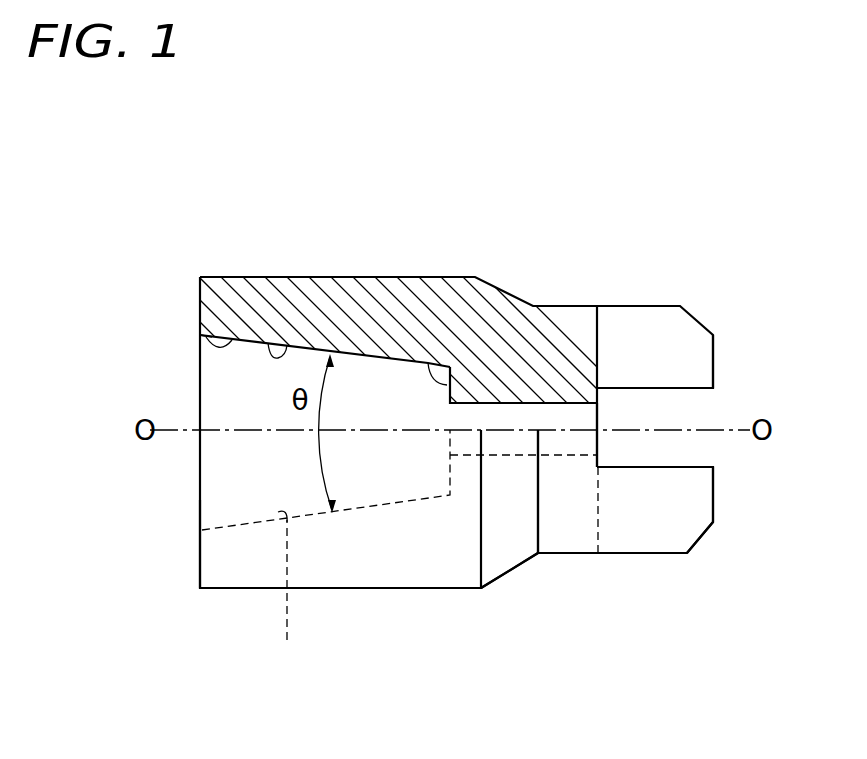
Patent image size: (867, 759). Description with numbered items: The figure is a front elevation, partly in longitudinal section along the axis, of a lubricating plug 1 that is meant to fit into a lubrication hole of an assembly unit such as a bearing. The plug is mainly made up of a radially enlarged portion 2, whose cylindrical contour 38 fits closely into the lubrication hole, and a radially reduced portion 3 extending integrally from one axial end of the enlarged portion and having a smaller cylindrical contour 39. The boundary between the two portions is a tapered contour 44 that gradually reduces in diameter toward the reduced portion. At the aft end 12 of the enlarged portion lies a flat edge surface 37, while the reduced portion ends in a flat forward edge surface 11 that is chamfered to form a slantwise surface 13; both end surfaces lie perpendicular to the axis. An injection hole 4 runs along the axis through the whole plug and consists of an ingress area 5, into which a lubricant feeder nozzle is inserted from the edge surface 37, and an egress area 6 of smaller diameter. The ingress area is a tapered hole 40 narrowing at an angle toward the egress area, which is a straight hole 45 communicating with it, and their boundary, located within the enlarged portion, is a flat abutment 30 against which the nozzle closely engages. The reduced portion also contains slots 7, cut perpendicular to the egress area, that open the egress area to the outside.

The lubricating plug 1 is at (508, 270).
The radially enlarged portion 2 is at (345, 292).
The radially reduced portion 3 is at (605, 306).
The injection hole 4 is at (507, 413).
The ingress area 5 is at (200, 342).
The egress area 6 is at (570, 417).
The slot 7 is at (648, 407).
The forward edge surface 11 is at (768, 392).
The aft end 12 is at (178, 392).
The slantwise surface 13 is at (705, 510).
The flat abutment 30 is at (427, 361).
The edge surface 37 is at (202, 568).
The cylindrical contour 38 is at (347, 589).
The cylindrical contour 39 is at (557, 306).
The tapered hole 40 is at (268, 343).
The tapered contour 44 is at (501, 577).
The straight hole 45 is at (523, 405).